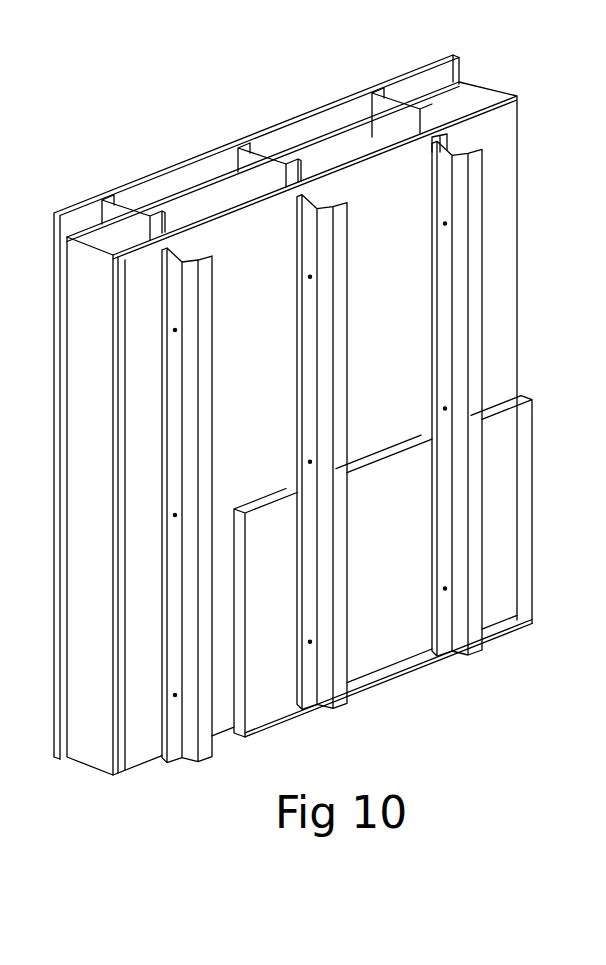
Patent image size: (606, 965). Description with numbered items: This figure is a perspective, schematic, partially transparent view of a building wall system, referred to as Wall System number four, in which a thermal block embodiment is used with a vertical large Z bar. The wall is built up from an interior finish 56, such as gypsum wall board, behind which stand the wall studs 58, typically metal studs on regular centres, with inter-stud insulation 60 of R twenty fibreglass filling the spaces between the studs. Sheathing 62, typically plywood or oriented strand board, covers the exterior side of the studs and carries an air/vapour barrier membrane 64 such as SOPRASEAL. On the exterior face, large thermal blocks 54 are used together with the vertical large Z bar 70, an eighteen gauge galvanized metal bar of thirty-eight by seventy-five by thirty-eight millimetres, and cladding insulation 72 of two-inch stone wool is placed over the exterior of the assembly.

The large thermal block 54 is at (445, 146).
The interior finish 56 is at (172, 165).
The wall stud 58 is at (245, 165).
The inter-stud insulation 60 is at (198, 190).
The sheathing 62 is at (372, 166).
The air/vapour barrier membrane 64 is at (383, 178).
The large Z bar 70 is at (475, 235).
The cladding insulation 72 is at (406, 668).